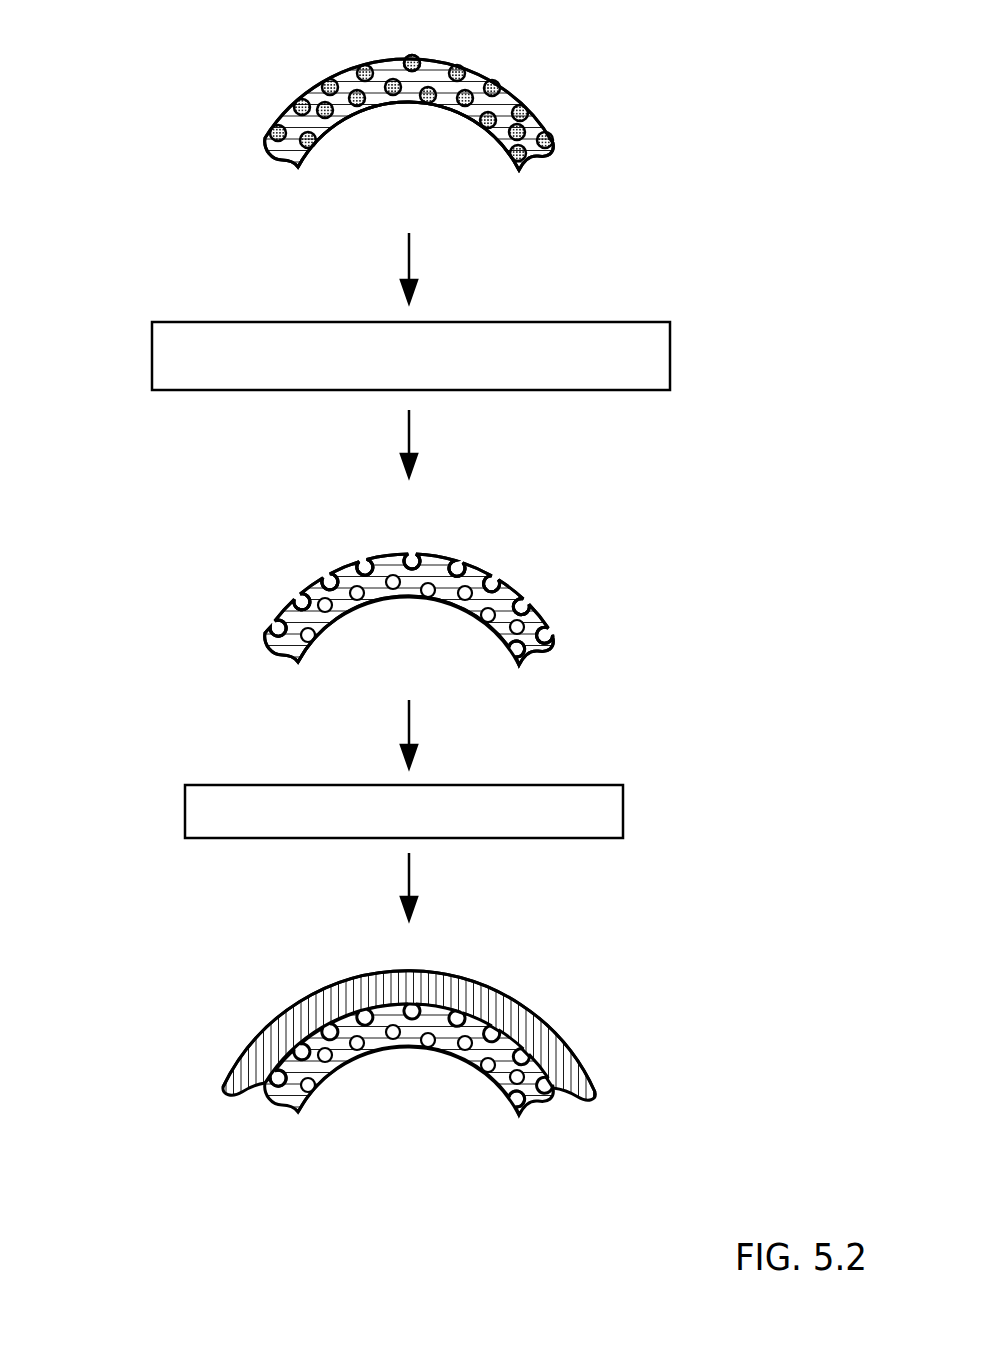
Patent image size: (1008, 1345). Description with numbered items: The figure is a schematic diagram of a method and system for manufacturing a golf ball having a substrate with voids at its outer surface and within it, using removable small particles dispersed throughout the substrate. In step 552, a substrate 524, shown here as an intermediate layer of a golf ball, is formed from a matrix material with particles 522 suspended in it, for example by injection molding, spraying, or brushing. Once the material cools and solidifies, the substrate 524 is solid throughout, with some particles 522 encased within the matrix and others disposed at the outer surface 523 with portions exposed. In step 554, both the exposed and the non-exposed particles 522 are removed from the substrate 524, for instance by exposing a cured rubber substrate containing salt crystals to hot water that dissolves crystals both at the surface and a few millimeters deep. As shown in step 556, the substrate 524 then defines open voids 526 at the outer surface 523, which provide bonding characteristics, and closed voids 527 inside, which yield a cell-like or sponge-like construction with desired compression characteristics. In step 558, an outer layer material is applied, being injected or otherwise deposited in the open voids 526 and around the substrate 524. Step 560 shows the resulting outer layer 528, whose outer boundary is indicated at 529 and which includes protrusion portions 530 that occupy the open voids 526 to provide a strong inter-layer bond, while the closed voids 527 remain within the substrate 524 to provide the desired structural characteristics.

The substrate forming step 552 is at (124, 67).
The particle removal step 554 is at (124, 340).
The voided substrate step 556 is at (124, 572).
The outer layer material application step 558 is at (124, 805).
The outer layer formation step 560 is at (124, 982).
The particles 522 is at (413, 56).
The outer surface 523 is at (478, 78).
The substrate 524 is at (412, 90).
The open voids 526 is at (495, 583).
The closed voids 527 is at (515, 650).
The outer layer 528 is at (522, 1013).
The outer surface of outer layer 529 is at (323, 988).
The protrusion portions 530 is at (278, 1082).